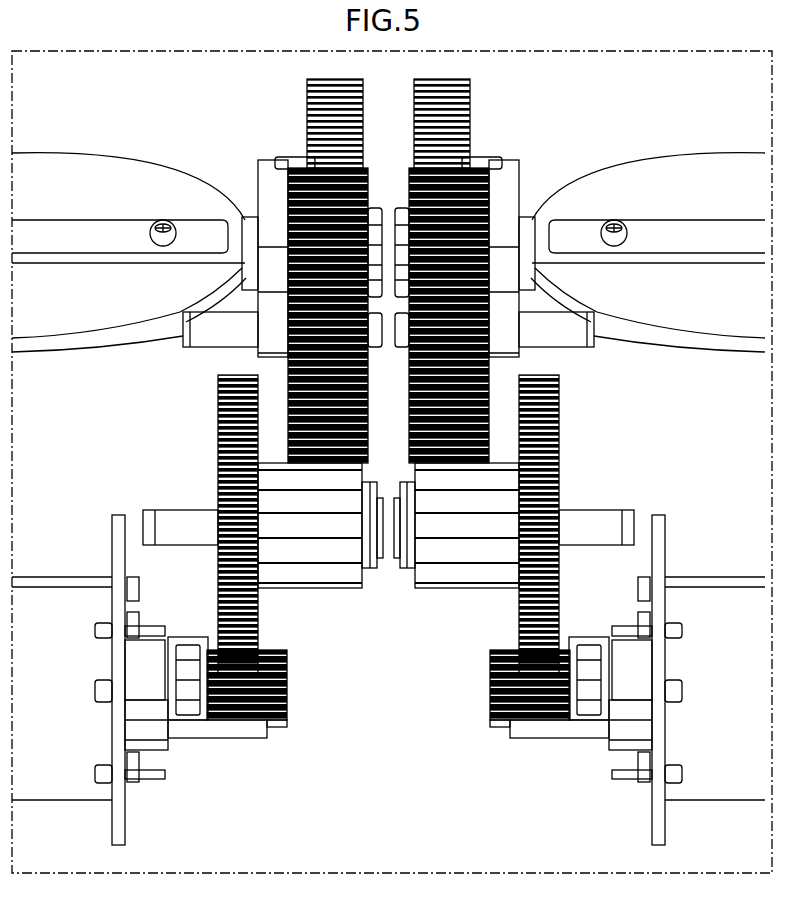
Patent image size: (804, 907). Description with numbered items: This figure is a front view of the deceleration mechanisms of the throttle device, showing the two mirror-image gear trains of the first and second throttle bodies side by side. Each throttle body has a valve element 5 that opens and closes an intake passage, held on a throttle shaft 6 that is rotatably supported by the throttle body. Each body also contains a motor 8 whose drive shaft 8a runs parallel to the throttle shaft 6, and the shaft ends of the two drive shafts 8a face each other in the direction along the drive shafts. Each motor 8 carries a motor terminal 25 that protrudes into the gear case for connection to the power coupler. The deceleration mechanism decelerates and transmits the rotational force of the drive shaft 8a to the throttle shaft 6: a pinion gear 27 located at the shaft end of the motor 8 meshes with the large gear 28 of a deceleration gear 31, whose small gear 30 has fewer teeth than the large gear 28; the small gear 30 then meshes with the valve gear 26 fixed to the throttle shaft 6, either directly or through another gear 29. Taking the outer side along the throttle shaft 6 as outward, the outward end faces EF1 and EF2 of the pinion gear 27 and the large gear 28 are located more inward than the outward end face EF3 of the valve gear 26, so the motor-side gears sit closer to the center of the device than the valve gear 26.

The valve element 5 is at (125, 180).
The throttle shaft 6 is at (73, 240).
The motor 8 is at (48, 612).
The drive shaft 8a is at (192, 695).
The motor terminal 25 is at (200, 638).
The valve gear 26 is at (305, 122).
The pinion gear 27 is at (277, 730).
The large gear 28 is at (263, 615).
The another gear 29 is at (274, 183).
The small gear 30 is at (325, 589).
The deceleration gear 31 is at (305, 652).
The outward end face of pinion gear EF1 is at (288, 698).
The outward end face of large gear EF2 is at (262, 397).
The outward end face of valve gear EF3 is at (362, 108).